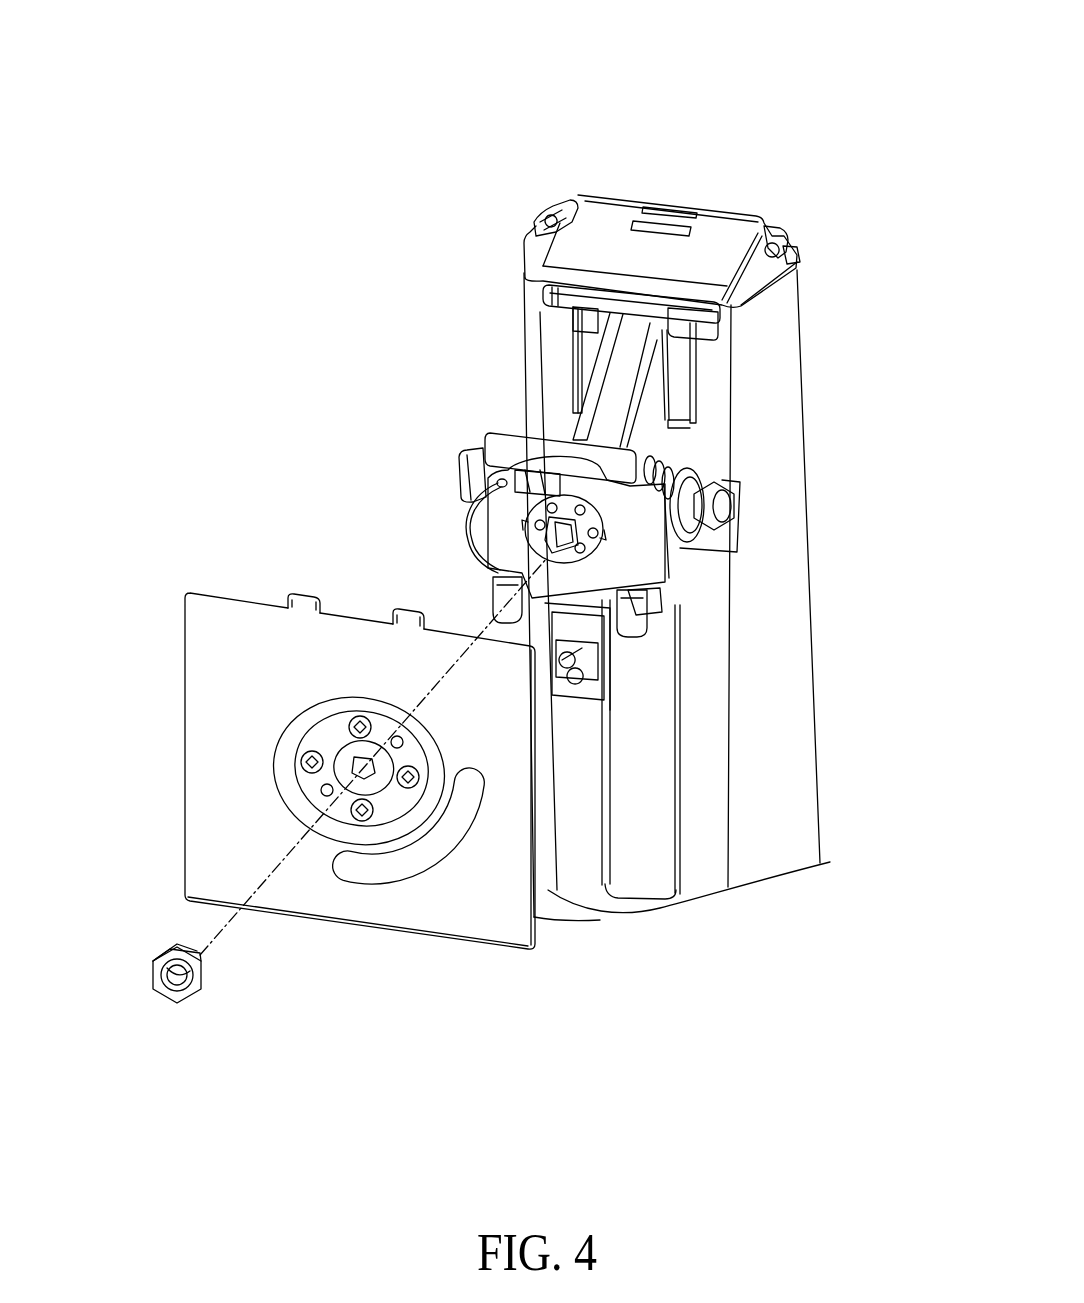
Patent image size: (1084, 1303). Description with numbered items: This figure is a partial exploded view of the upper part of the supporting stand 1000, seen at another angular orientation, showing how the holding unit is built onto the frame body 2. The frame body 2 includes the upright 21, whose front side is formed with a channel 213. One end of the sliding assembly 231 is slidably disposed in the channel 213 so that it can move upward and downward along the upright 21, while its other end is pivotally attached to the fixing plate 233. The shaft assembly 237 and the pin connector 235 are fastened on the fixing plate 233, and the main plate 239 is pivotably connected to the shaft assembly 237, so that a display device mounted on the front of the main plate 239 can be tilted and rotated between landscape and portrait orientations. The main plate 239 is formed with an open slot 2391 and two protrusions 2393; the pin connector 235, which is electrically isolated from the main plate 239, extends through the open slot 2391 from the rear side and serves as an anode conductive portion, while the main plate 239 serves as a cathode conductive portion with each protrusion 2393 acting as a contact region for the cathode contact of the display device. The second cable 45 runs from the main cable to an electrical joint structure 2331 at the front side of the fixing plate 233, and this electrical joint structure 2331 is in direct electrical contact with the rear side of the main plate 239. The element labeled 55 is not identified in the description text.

The supporting stand 1000 is at (907, 44).
The frame body 2 is at (812, 508).
The upright 21 is at (807, 811).
The channel 213 is at (669, 885).
The sliding assembly 231 is at (628, 377).
The fixing plate 233 is at (517, 437).
The electrical joint structure 2331 is at (483, 453).
The pin connector 235 is at (543, 657).
The shaft assembly 237 is at (527, 540).
The main plate 239 is at (497, 940).
The open slot 2391 is at (405, 862).
The protrusion 2393 is at (307, 597).
The second cable 45 is at (475, 510).
The fixing member 55 is at (667, 632).